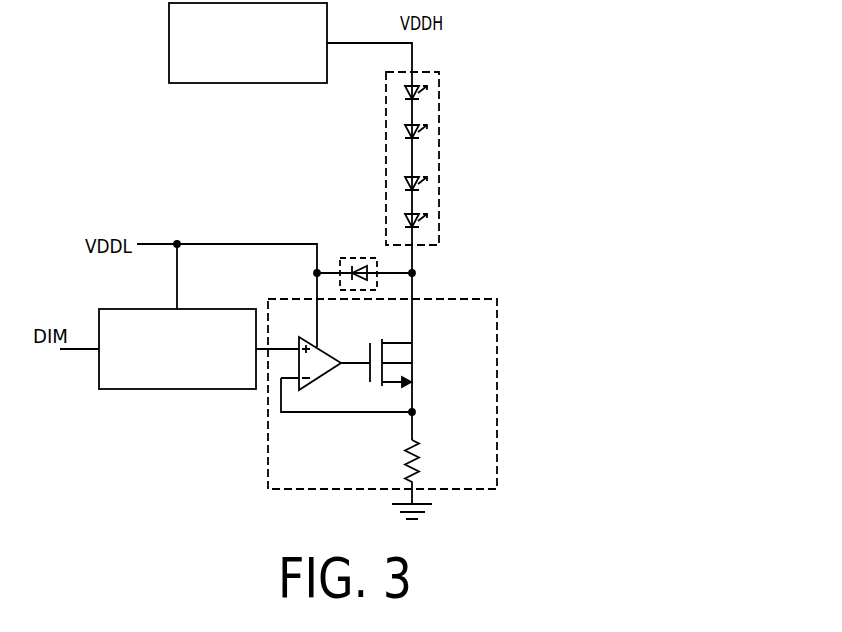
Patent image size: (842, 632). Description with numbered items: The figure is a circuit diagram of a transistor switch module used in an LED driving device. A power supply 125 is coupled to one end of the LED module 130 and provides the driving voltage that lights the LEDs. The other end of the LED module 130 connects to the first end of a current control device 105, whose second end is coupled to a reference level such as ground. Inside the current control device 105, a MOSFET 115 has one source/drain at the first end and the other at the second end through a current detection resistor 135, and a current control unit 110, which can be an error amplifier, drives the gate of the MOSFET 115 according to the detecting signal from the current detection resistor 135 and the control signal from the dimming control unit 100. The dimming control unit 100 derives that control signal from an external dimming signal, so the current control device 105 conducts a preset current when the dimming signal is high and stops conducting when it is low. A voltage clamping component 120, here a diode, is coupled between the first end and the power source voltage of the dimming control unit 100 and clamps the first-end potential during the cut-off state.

The dimming control unit 100 is at (122, 388).
The current control device 105 is at (497, 345).
The current control unit 110 is at (318, 349).
The MOSFET 115 is at (430, 371).
The voltage clamping component 120 is at (376, 258).
The power supply 125 is at (169, 50).
The LED module 130 is at (386, 136).
The current detection resistor 135 is at (415, 450).